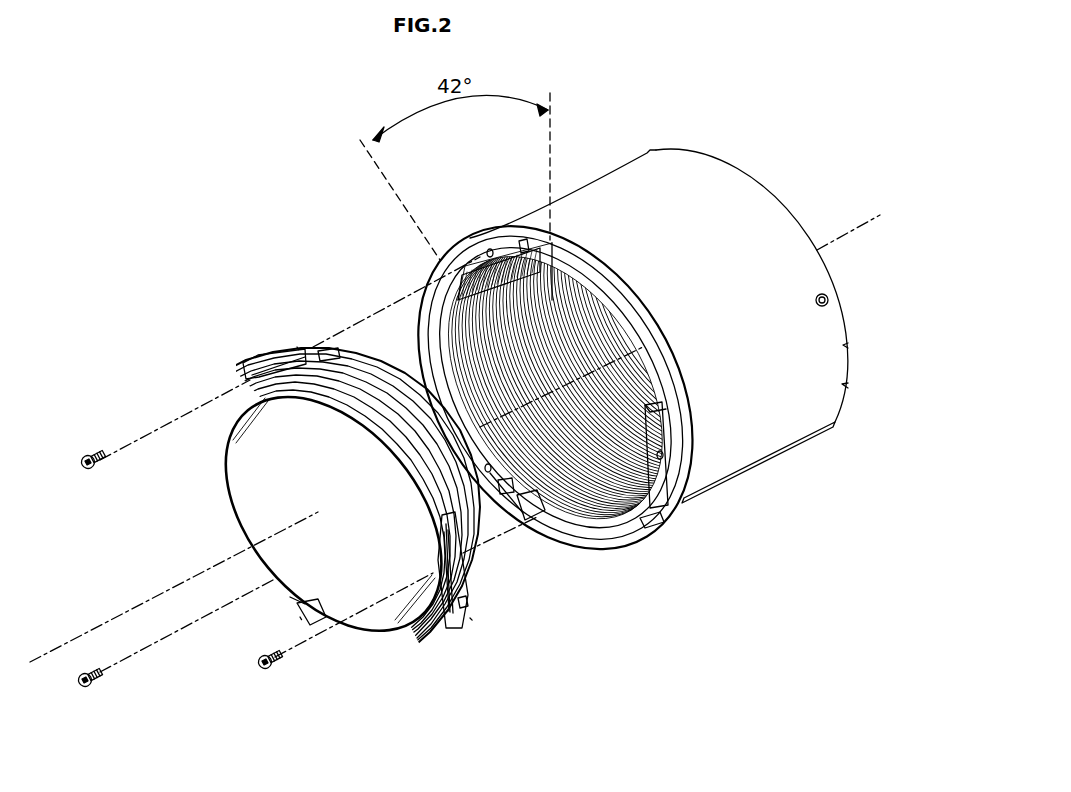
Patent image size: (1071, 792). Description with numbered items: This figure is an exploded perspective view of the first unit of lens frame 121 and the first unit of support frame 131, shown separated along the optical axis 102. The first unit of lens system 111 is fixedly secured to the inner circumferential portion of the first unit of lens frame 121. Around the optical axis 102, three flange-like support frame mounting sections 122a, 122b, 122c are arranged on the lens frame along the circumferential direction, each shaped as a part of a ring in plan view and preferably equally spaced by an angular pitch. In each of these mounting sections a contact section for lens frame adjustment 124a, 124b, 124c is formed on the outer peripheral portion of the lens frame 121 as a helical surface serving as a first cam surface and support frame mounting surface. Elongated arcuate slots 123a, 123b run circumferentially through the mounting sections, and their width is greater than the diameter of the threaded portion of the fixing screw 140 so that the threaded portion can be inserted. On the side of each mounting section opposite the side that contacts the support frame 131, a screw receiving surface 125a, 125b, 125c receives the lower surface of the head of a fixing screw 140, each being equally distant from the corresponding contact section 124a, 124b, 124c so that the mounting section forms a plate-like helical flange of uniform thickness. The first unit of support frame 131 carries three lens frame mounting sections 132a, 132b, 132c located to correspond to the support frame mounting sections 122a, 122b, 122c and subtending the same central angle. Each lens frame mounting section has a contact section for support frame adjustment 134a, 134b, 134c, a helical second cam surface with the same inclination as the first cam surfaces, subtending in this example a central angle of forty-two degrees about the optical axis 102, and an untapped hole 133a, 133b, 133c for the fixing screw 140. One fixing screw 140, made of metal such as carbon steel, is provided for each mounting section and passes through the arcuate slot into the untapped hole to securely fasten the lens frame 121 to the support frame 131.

The optical axis 102 is at (127, 610).
The first unit of lens system 111 is at (273, 500).
The first unit of lens frame 121 is at (352, 363).
The support frame mounting section 122a is at (285, 350).
The support frame mounting section 122b is at (462, 615).
The support frame mounting section 122c is at (310, 607).
The elongated arcuate slot 123a is at (313, 343).
The elongated arcuate slot 123b is at (472, 603).
The contact section for lens frame adjustment 124a is at (297, 347).
The contact section for lens frame adjustment 124b is at (472, 620).
The contact section for lens frame adjustment 124c is at (302, 620).
The screw receiving surface 125a is at (252, 355).
The screw receiving surface 125b is at (440, 617).
The screw receiving surface 125c is at (290, 600).
The first unit of support frame 131 is at (745, 200).
The lens frame mounting section 132a is at (490, 237).
The lens frame mounting section 132b is at (660, 503).
The lens frame mounting section 132c is at (527, 513).
The untapped hole 133a is at (468, 250).
The untapped hole 133b is at (667, 458).
The untapped hole 133c is at (488, 472).
The contact section for support frame adjustment 134a is at (523, 240).
The contact section for support frame adjustment 134b is at (665, 515).
The contact section for support frame adjustment 134c is at (510, 517).
The fixing screw 140 is at (90, 455).